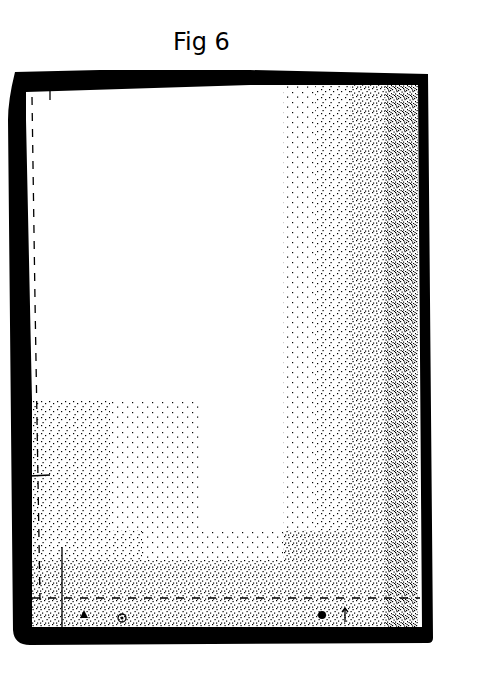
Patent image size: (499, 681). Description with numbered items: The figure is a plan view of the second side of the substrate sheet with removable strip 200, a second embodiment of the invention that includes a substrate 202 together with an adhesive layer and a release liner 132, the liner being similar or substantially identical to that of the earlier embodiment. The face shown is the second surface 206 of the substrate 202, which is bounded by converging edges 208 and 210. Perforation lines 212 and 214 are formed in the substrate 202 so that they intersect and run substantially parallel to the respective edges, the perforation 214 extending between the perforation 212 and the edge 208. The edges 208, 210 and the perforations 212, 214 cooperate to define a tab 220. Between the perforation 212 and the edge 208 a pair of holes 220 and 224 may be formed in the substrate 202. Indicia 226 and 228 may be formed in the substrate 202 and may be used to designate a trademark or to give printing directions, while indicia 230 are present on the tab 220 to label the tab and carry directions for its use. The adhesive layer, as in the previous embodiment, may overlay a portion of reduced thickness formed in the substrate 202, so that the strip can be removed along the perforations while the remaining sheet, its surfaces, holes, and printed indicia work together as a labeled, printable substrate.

The substrate sheet with removable strip 200 is at (347, 61).
The substrate 202 is at (397, 252).
The second surface 206 is at (226, 395).
The release liner 132 is at (41, 416).
The edge 210 is at (70, 478).
The tab 220 is at (53, 602).
The perforation line 214 is at (62, 608).
The perforation line 212 is at (160, 598).
The indicia 226 is at (213, 608).
The edge 208 is at (262, 627).
The hole 224 is at (325, 611).
The indicia 228 is at (375, 608).
The indicia 230 is at (57, 640).